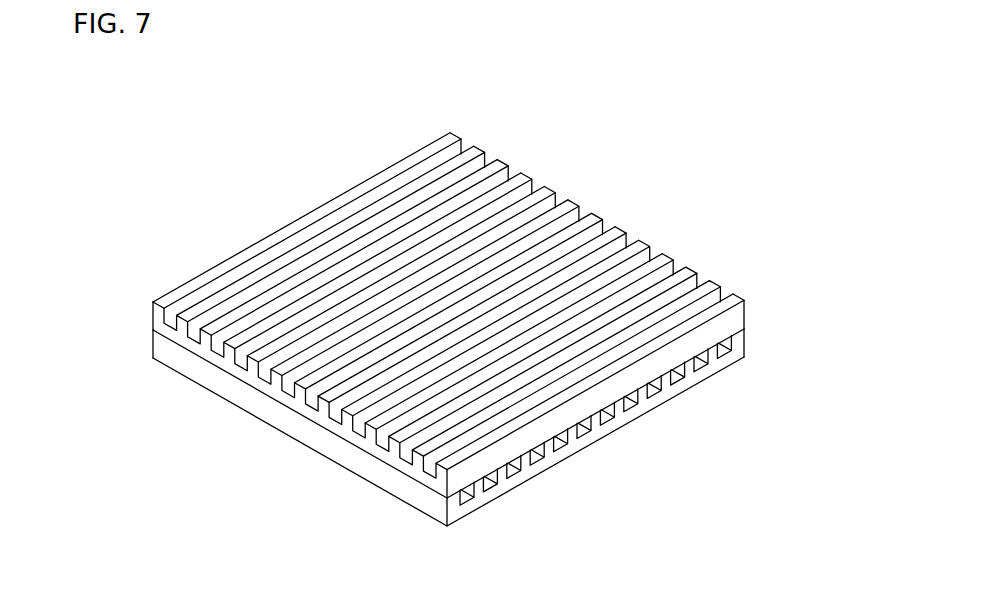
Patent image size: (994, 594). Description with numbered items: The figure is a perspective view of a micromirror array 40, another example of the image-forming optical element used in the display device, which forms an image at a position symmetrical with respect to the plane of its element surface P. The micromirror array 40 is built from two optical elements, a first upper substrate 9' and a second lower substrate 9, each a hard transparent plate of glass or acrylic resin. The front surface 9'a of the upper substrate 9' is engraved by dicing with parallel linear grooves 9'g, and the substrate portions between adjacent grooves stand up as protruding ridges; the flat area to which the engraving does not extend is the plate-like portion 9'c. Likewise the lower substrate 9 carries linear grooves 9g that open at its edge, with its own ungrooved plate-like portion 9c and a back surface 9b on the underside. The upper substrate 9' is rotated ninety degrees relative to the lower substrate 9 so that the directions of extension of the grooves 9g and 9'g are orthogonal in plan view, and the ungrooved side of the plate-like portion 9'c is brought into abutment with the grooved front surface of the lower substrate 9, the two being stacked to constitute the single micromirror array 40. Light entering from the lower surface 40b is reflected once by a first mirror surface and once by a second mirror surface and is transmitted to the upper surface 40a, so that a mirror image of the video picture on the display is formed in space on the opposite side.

The micromirror array 40 is at (294, 194).
The upper surface of the micromirror array 40a is at (375, 180).
The lower surface of the micromirror array 40b is at (407, 482).
The first upper substrate 9' is at (447, 321).
The front surface of the upper substrate 9'a is at (525, 285).
The plate-like portion of the upper substrate 9'c is at (300, 400).
The linear grooves of the upper substrate 9'g is at (300, 405).
The second lower substrate 9 is at (446, 447).
The back surface of the lower substrate 9b is at (609, 439).
The plate-like portion of the lower substrate 9c is at (707, 370).
The linear grooves of the lower substrate 9g is at (563, 448).
The element surface P is at (213, 363).